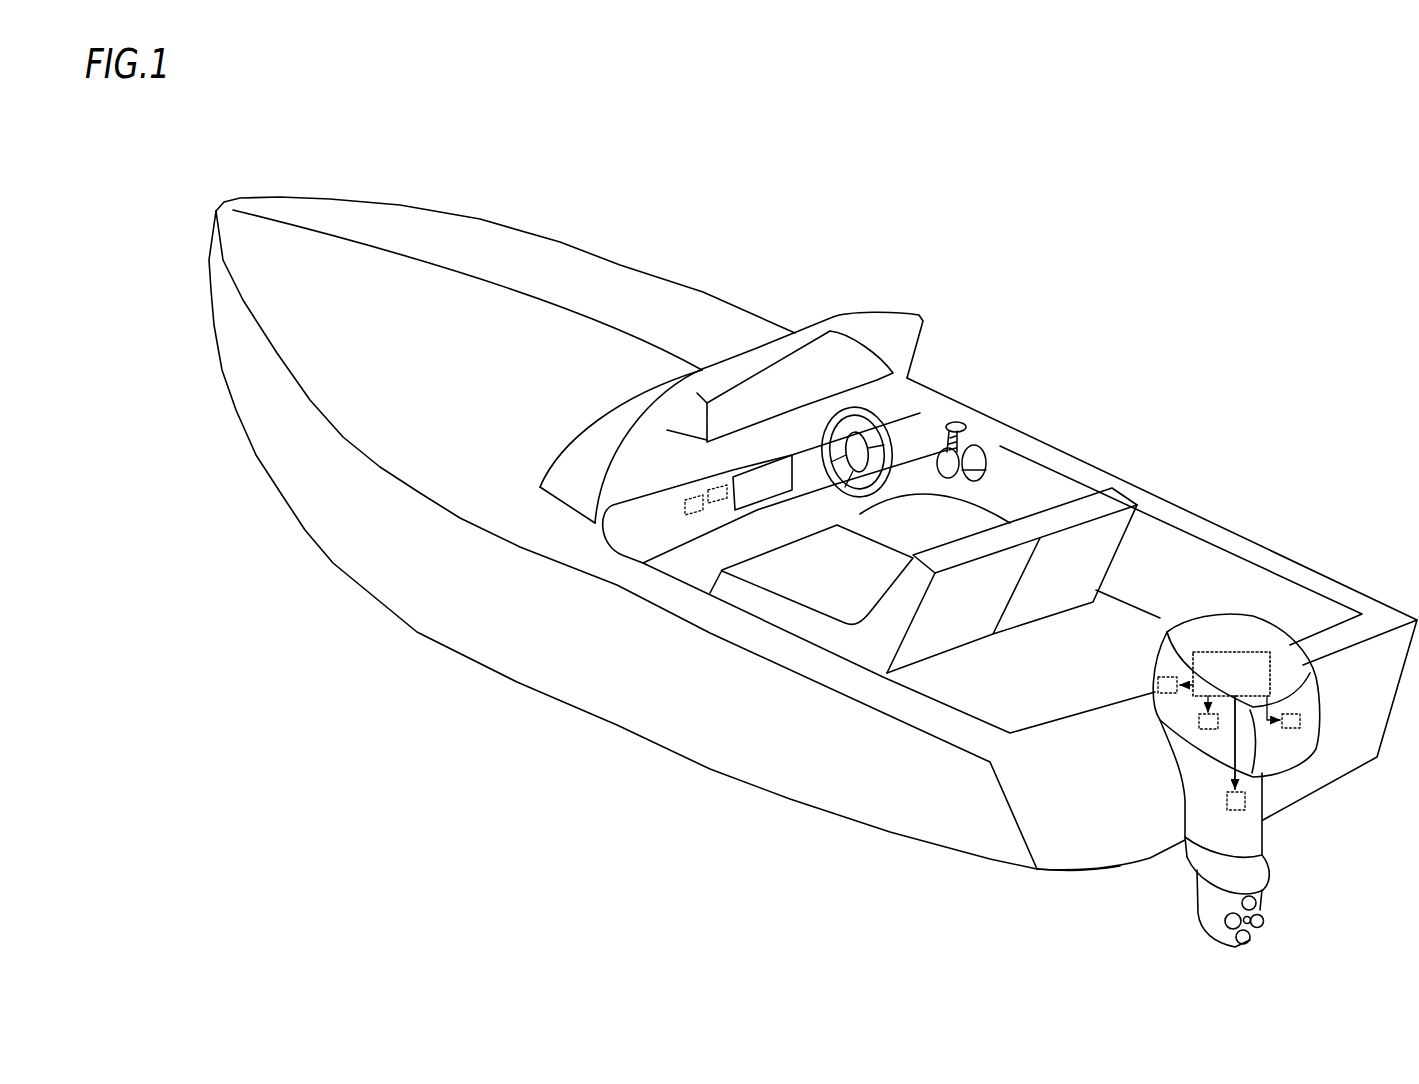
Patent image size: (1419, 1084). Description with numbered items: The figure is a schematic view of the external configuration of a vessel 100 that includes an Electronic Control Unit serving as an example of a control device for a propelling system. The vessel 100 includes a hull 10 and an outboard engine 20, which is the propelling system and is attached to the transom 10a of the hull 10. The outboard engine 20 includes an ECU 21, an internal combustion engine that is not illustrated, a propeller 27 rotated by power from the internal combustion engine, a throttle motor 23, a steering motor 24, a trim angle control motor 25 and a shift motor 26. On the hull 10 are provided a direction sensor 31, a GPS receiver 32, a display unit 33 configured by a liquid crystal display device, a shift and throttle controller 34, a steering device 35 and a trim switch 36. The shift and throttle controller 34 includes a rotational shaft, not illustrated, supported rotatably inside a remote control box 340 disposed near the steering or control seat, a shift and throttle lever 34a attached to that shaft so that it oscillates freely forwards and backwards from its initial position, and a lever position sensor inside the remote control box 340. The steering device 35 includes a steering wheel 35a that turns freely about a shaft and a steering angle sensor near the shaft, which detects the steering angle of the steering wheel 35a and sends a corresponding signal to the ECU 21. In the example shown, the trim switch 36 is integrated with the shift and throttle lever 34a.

The vessel 100 is at (718, 174).
The hull 10 is at (500, 218).
The transom 10a is at (1097, 852).
The outboard engine 20 is at (1329, 720).
The ECU 21 is at (1240, 652).
The throttle motor 23 is at (1292, 729).
The steering motor 24 is at (1208, 731).
The trim angle control motor 25 is at (1168, 676).
The shift motor 26 is at (1246, 801).
The propeller 27 is at (1263, 922).
The direction sensor 31 is at (694, 497).
The GPS receiver 32 is at (720, 488).
The display unit 33 is at (790, 455).
The shift and throttle controller 34 is at (967, 423).
The shift and throttle lever 34a is at (982, 457).
The remote control box 340 is at (962, 477).
The steering device 35 is at (892, 423).
The steering wheel 35a is at (872, 410).
The trim switch 36 is at (971, 426).